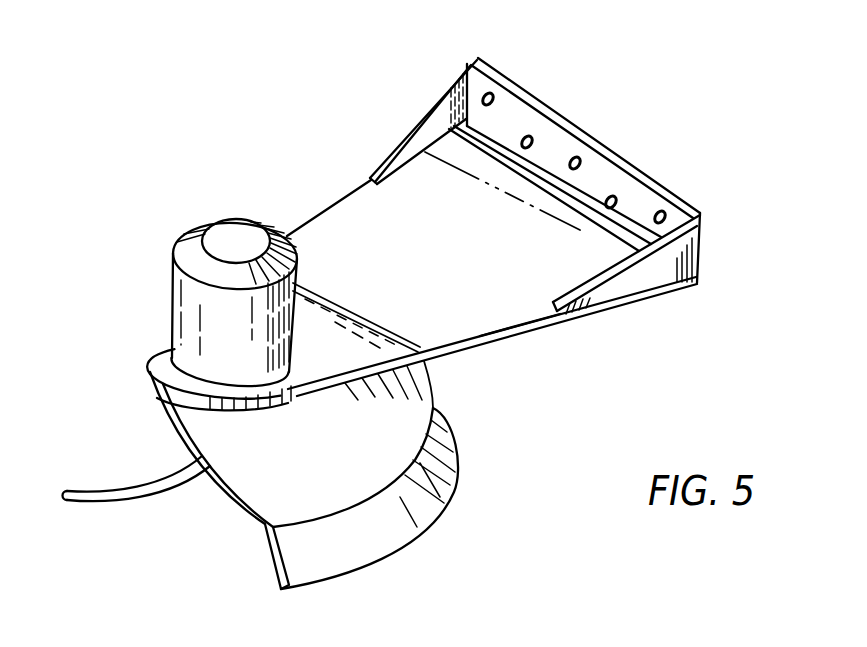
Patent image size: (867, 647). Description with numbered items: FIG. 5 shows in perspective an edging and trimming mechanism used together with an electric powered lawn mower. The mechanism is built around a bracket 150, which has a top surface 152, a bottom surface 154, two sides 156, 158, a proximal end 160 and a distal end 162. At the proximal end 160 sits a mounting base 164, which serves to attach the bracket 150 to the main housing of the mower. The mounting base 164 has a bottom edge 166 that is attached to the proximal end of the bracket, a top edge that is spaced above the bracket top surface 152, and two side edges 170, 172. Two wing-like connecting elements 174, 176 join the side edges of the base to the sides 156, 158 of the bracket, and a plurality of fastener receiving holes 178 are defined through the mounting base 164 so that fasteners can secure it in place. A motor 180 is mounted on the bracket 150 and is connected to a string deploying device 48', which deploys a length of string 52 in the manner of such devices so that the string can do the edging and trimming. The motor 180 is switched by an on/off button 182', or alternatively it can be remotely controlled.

The string deploying device 48' is at (326, 444).
The string 52 is at (97, 510).
The bracket 150 is at (317, 193).
The top surface 152 is at (447, 318).
The bottom surface 154 is at (512, 328).
The side 156 is at (433, 362).
The side 158 is at (341, 198).
The proximal end 160 is at (684, 291).
The distal end 162 is at (152, 368).
The mounting base 164 is at (655, 165).
The bottom edge 166 is at (698, 273).
The side edge 170 is at (701, 229).
The side edge 172 is at (469, 58).
The wing-like connecting element 174 is at (649, 268).
The wing-like connecting element 176 is at (427, 118).
The fastener receiving holes 178 is at (528, 137).
The motor 180 is at (172, 295).
The on/off button 182' is at (229, 213).